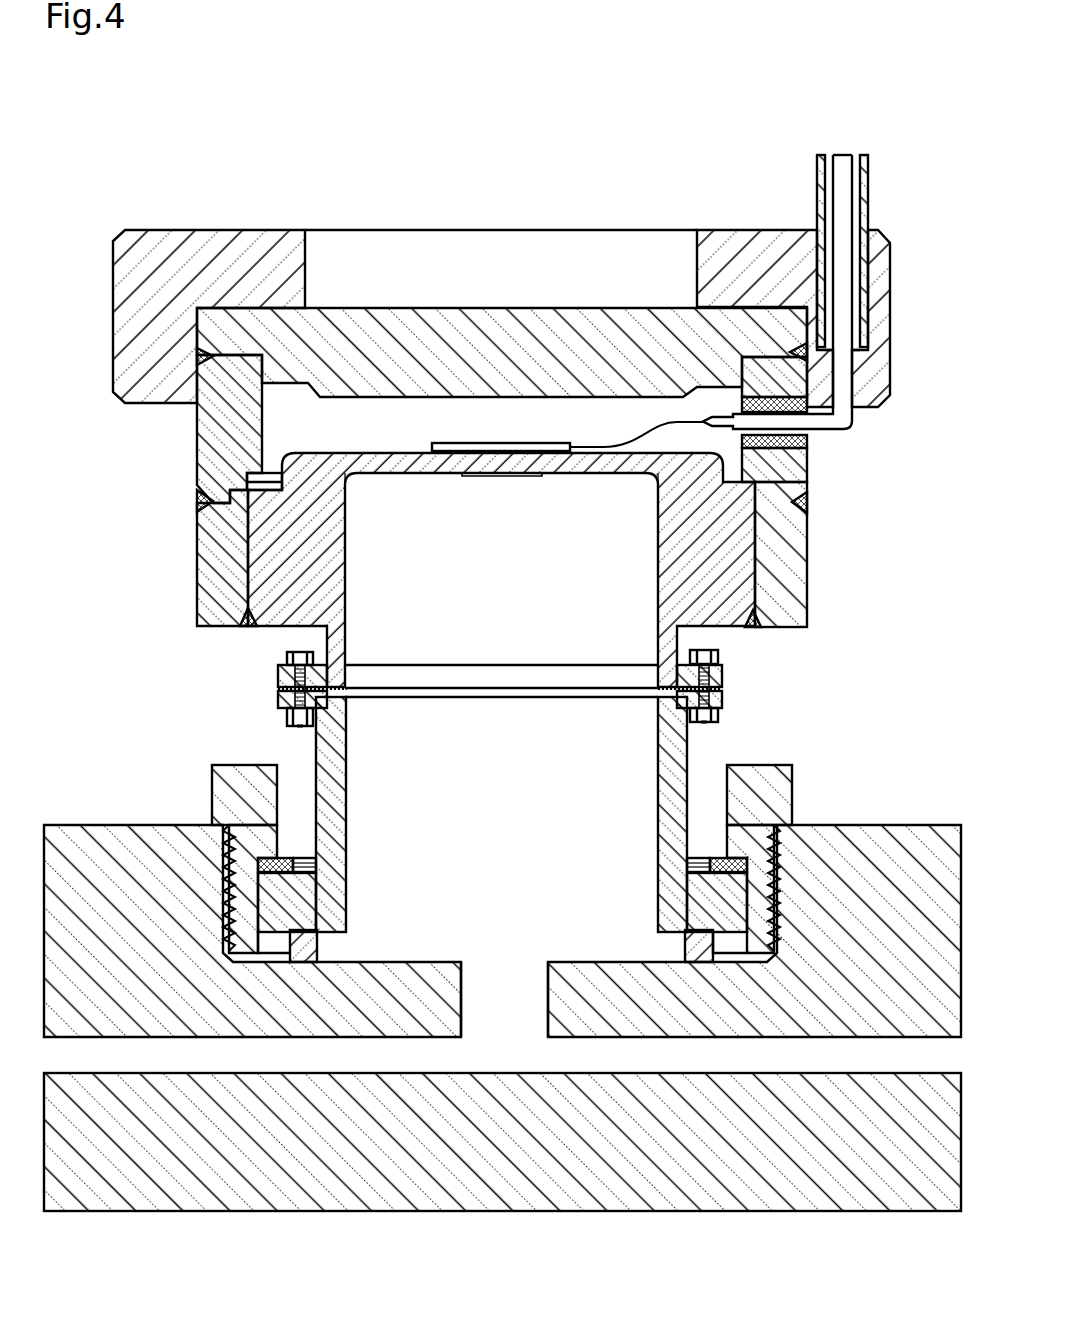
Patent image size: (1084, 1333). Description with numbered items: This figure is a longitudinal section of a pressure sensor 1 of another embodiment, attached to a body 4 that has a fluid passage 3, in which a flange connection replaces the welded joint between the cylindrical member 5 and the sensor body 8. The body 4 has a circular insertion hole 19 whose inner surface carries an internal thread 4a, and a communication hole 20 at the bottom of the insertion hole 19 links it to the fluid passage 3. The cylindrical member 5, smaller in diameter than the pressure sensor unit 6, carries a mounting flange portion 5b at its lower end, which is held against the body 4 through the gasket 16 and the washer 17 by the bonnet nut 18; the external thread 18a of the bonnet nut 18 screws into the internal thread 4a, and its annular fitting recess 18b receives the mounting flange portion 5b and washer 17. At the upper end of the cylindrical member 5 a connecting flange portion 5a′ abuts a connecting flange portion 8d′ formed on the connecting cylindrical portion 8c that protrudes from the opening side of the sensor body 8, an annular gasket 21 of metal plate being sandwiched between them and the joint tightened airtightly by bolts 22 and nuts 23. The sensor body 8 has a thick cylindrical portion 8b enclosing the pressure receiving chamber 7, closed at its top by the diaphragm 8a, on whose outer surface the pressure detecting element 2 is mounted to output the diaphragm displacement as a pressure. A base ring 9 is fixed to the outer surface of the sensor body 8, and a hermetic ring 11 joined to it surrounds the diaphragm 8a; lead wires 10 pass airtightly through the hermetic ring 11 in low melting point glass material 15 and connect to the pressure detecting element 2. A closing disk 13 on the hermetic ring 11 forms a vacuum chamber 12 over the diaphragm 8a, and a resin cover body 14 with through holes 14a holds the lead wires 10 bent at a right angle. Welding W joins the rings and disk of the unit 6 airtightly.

The pressure sensor 1 is at (190, 168).
The pressure detecting element 2 is at (502, 445).
The fluid passage 3 is at (673, 1057).
The body 4 is at (122, 895).
The internal thread 4a is at (778, 880).
The cylindrical member 5 is at (655, 795).
The connecting flange portion 5a′ is at (716, 700).
The mounting flange portion 5b is at (715, 905).
The pressure sensor unit 6 is at (818, 527).
The pressure receiving chamber 7 is at (443, 567).
The sensor body 8 is at (243, 570).
The diaphragm 8a is at (422, 460).
The cylindrical portion 8b is at (705, 555).
The connecting cylindrical portion 8c is at (340, 648).
The connecting flange portion 8d′ is at (716, 678).
The base ring 9 is at (785, 560).
The lead wires 10 is at (845, 278).
The hermetic ring 11 is at (225, 430).
The vacuum chamber 12 is at (401, 420).
The closing disk 13 is at (578, 352).
The cover body 14 is at (750, 266).
The through holes 14a is at (845, 370).
The low melting point glass material 15 is at (790, 455).
The gasket 16 is at (305, 945).
The washer 17 is at (285, 858).
The bonnet nut 18 is at (252, 790).
The external thread 18a is at (777, 852).
The annular fitting recess 18b is at (740, 887).
The insertion hole 19 is at (258, 955).
The communication hole 20 is at (502, 1000).
The annular gasket 21 is at (716, 688).
The bolts 22 is at (288, 660).
The nuts 23 is at (288, 715).
The welding W is at (198, 357).